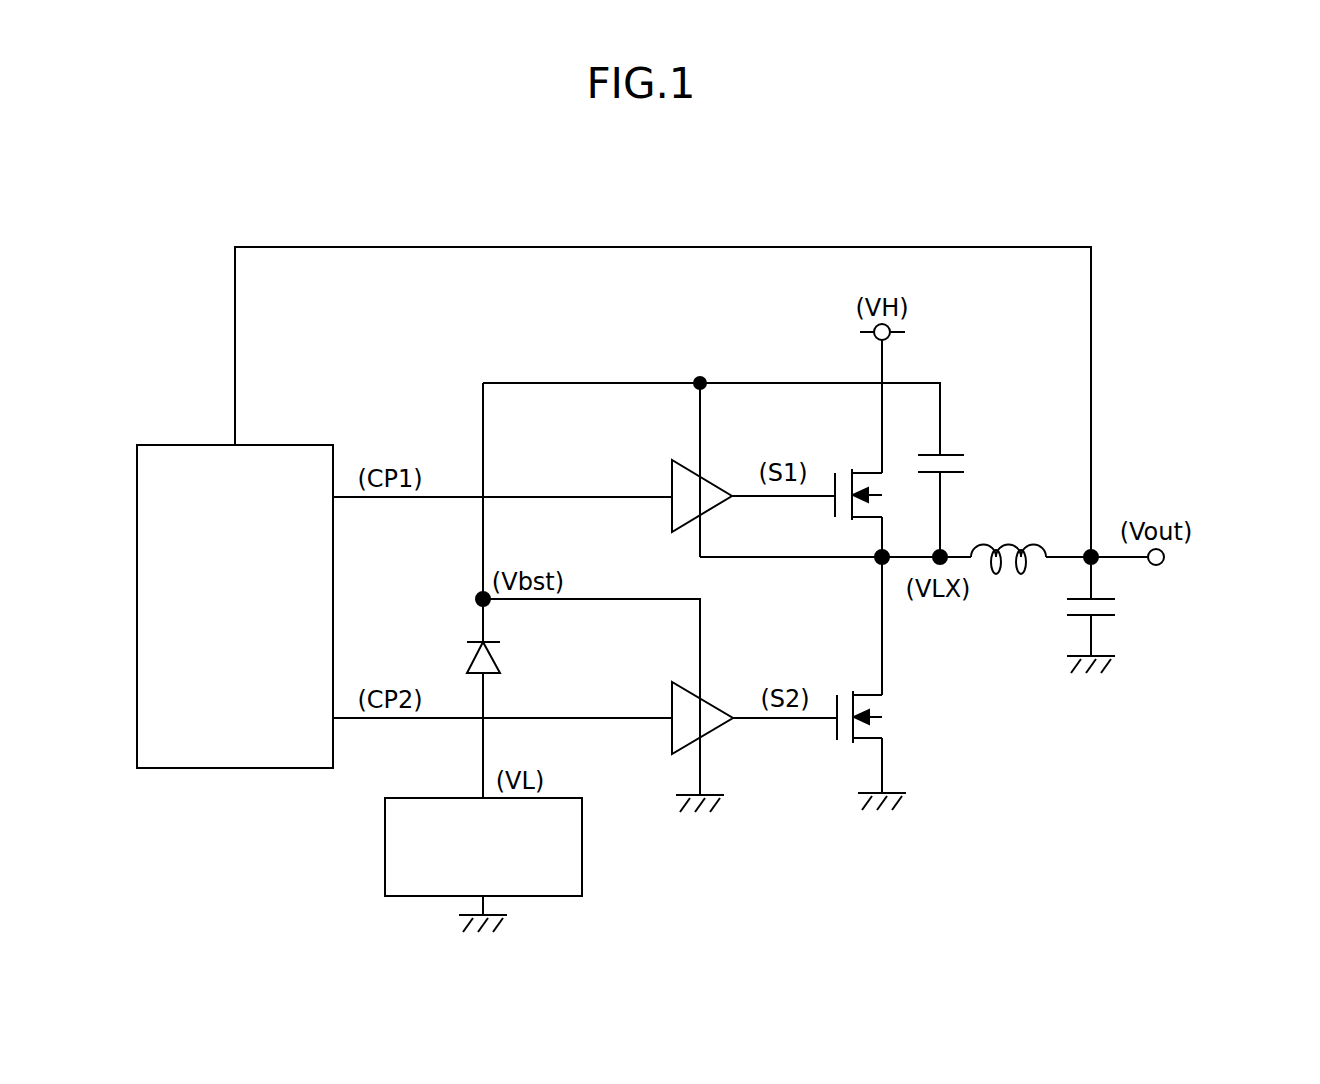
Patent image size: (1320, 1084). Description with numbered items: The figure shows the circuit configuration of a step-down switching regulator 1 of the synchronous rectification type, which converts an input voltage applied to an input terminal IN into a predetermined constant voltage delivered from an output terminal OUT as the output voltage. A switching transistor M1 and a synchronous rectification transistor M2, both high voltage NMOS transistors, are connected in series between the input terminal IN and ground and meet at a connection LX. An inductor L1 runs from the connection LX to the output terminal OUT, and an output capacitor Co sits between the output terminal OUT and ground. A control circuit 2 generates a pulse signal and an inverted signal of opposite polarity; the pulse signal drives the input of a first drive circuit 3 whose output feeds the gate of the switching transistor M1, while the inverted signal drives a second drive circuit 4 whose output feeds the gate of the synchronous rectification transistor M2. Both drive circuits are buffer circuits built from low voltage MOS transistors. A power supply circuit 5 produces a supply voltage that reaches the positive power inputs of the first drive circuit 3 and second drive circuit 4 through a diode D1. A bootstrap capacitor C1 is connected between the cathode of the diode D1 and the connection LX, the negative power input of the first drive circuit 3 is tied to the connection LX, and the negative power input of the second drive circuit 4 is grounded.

The switching regulator 1 is at (1182, 290).
The control circuit 2 is at (191, 445).
The first drive circuit 3 is at (712, 484).
The second drive circuit 4 is at (712, 706).
The power supply circuit 5 is at (582, 845).
The switching transistor M1 is at (858, 476).
The synchronous rectification transistor M2 is at (883, 717).
The bootstrap capacitor C1 is at (963, 465).
The inductor L1 is at (1008, 538).
The output capacitor Co is at (1112, 606).
The diode D1 is at (507, 660).
The input terminal IN is at (890, 338).
The output terminal OUT is at (1163, 562).
The connection LX is at (876, 566).